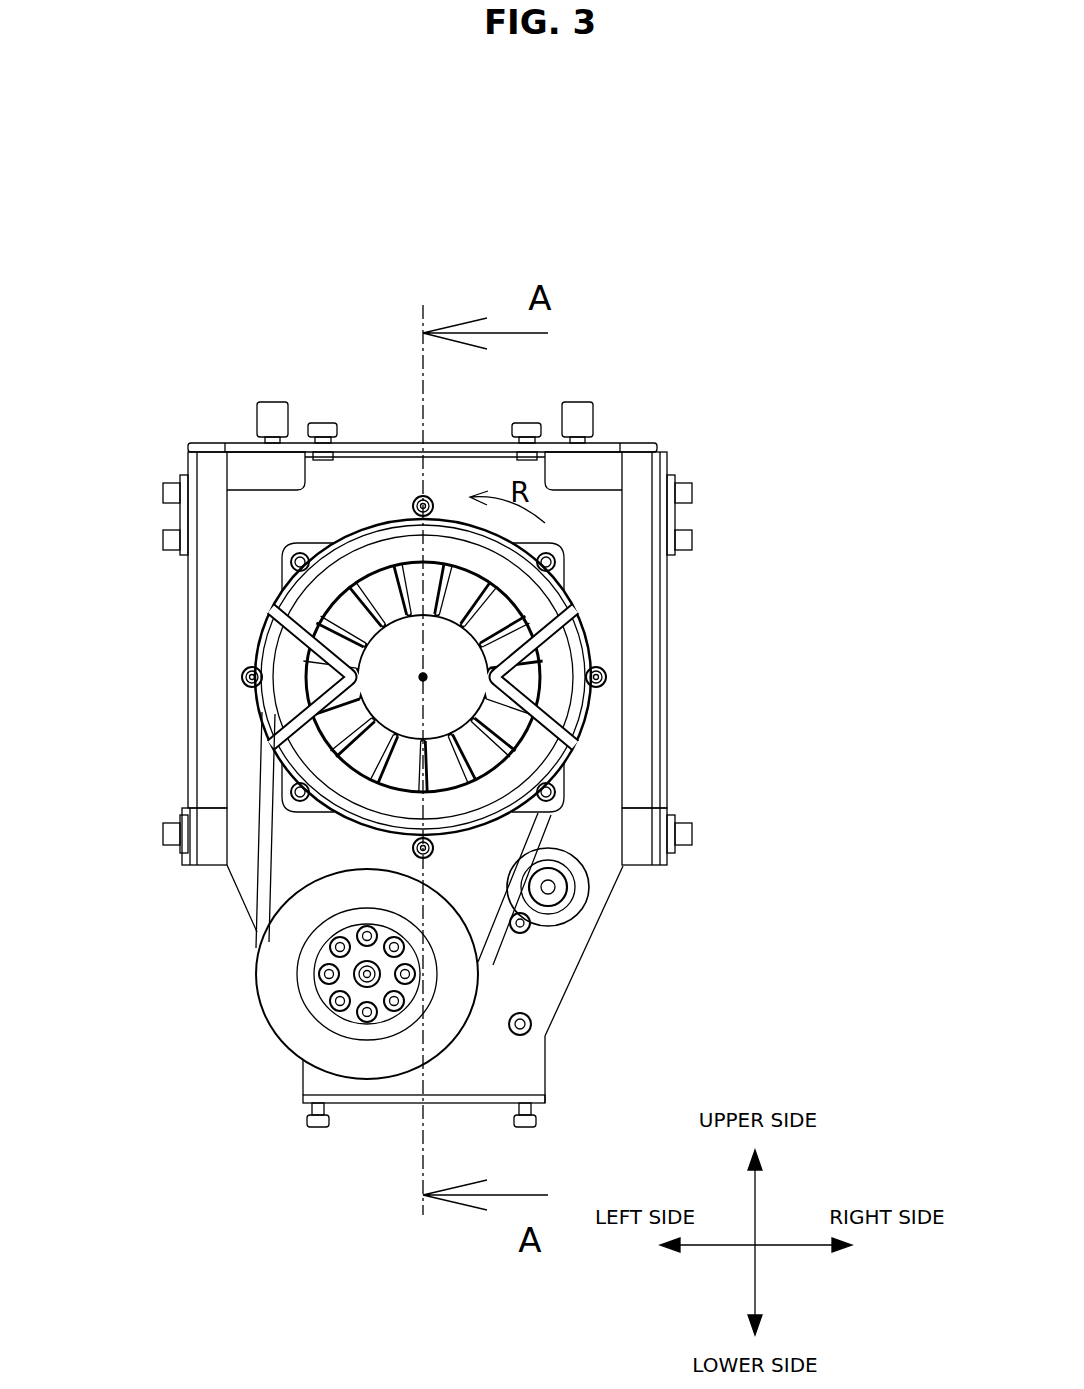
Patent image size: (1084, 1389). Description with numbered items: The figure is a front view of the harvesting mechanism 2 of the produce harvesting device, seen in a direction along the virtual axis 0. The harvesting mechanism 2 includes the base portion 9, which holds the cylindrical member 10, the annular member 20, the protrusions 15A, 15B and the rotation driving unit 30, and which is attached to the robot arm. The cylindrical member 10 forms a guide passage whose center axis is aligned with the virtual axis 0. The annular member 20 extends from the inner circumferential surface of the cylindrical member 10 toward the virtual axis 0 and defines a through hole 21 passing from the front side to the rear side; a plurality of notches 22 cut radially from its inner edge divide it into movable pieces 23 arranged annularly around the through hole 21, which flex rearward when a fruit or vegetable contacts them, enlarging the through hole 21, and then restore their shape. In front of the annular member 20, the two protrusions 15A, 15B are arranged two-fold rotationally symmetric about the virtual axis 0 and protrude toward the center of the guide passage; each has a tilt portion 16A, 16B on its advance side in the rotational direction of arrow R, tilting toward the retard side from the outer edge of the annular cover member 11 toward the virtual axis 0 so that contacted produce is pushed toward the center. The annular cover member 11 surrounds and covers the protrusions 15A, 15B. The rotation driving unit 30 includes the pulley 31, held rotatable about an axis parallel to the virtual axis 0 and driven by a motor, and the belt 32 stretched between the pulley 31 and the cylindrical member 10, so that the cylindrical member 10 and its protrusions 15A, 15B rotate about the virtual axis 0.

The harvesting mechanism 2 is at (429, 214).
The base portion 9 is at (603, 443).
The cylindrical member 10 is at (617, 863).
The annular cover member 11 is at (400, 682).
The annular member 20 is at (394, 592).
The through hole 21 is at (333, 607).
The notches 22 is at (540, 797).
The movable pieces 23 is at (540, 753).
The virtual axis 0 is at (563, 562).
The protrusion 15A is at (300, 688).
The tilt portion 16A is at (333, 725).
The protrusion 15B is at (540, 648).
The tilt portion 16B is at (540, 598).
The rotation driving unit 30 is at (263, 1030).
The pulley 31 is at (283, 983).
The belt 32 is at (262, 880).